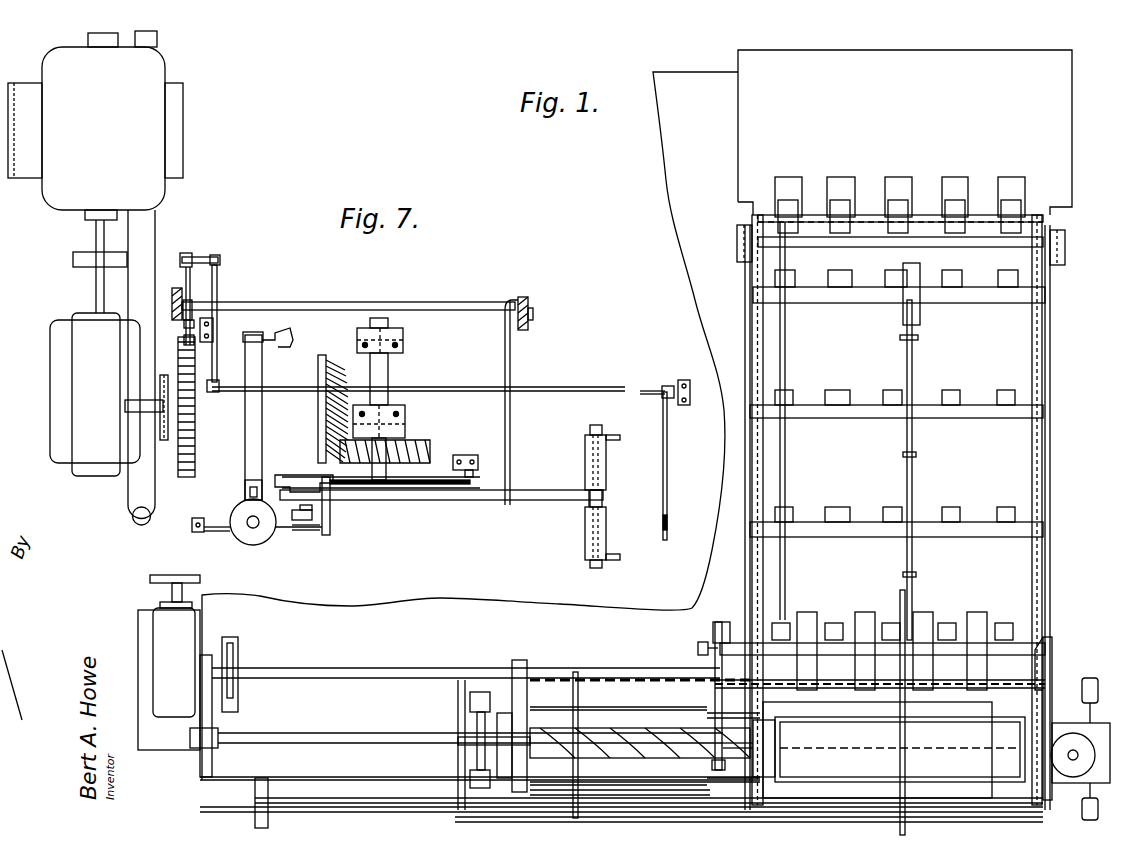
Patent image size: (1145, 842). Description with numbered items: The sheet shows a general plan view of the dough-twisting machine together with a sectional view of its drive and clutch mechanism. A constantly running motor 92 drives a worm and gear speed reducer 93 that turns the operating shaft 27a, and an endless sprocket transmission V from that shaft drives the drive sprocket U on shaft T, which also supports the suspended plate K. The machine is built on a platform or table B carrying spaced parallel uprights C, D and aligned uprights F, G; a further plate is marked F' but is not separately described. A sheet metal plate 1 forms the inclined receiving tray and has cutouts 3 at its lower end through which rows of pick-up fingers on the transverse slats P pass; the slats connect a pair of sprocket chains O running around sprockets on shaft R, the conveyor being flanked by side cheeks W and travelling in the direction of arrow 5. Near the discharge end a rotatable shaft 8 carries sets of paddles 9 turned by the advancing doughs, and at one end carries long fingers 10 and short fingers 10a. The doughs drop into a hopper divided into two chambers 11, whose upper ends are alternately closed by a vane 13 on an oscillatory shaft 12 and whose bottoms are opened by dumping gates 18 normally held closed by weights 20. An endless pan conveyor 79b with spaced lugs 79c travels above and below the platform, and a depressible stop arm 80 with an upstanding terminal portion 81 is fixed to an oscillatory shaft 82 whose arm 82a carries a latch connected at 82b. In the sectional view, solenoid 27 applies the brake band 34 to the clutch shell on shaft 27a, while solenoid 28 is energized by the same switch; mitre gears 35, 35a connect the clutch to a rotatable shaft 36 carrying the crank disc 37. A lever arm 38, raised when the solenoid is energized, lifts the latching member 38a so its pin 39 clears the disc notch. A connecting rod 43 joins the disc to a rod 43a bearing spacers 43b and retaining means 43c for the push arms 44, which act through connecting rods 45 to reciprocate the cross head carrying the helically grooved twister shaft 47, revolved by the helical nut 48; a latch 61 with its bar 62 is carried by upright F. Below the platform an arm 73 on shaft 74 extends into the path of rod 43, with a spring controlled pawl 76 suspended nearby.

In FIG. 7, the motor 92 is at (91, 125).
In FIG. 7, the worm and gear speed reducer 93 is at (52, 392).
In FIG. 7, the operating shaft 27a is at (135, 404).
In FIG. 7, the endless sprocket transmission V is at (163, 396).
In FIG. 7, the shaft 74 is at (195, 462).
In FIG. 7, the spring controlled pawl 76 is at (183, 332).
In FIG. 7, the connection 82b is at (198, 258).
In FIG. 7, the arm 82a is at (218, 282).
In FIG. 7, the oscillatory shaft 82 is at (545, 390).
In FIG. 7, the brake band 34 is at (250, 464).
In FIG. 7, the solenoid 27 is at (253, 540).
In FIG. 7, the mitre gear 35 is at (325, 356).
In FIG. 7, the mitre gear 35a is at (410, 445).
In FIG. 7, the rotatable shaft 36 is at (384, 370).
In FIG. 7, the crank disc 37 is at (304, 473).
In FIG. 7, the lever arm 38 is at (295, 530).
In FIG. 7, the latching member 38a is at (418, 490).
In FIG. 7, the pin 39 is at (330, 514).
In FIG. 7, the connecting rod 43 is at (444, 500).
In FIG. 7, the rod 43a is at (585, 455).
In FIG. 7, the spacers 43b is at (585, 445).
In FIG. 7, the retaining means 43c is at (600, 432).
In FIG. 7, the push arms 44 is at (610, 440).
In FIG. 1, the push arms 44 is at (618, 795).
In FIG. 7, the arm 73 is at (511, 362).
In FIG. 7, the depressible stop arm 80 is at (668, 470).
In FIG. 7, the upstanding terminal portion 81 is at (668, 524).
In FIG. 1, the sheet metal plate 1 is at (1072, 142).
In FIG. 1, the cutouts 3 is at (960, 190).
In FIG. 1, the shaft R is at (975, 247).
In FIG. 1, the upright C is at (737, 250).
In FIG. 1, the upright D is at (1066, 242).
In FIG. 1, the side cheeks W is at (748, 346).
In FIG. 1, the sprocket chains O is at (752, 462).
In FIG. 1, the platform B is at (1028, 578).
In FIG. 1, the transverse slats P is at (938, 418).
In FIG. 1, the arrow 5 is at (950, 392).
In FIG. 1, the endless pan conveyor 79b is at (912, 488).
In FIG. 1, the lugs 79c is at (916, 455).
In FIG. 1, the paddles 9 is at (806, 614).
In FIG. 1, the rotatable shaft 8 is at (946, 655).
In FIG. 1, the dumping gates 18 is at (992, 674).
In FIG. 1, the chambers 11 is at (852, 730).
In FIG. 1, the oscillatory shaft 12 is at (780, 748).
In FIG. 1, the vane 13 is at (805, 777).
In FIG. 1, the solenoid 28 is at (1082, 748).
In FIG. 1, the weights 20 is at (1088, 684).
In FIG. 1, the upright G is at (1048, 795).
In FIG. 1, the upright F is at (192, 723).
In FIG. 1, the drive sprocket U is at (238, 662).
In FIG. 1, the shaft T is at (376, 668).
In FIG. 1, the plate F' is at (508, 716).
In FIG. 1, the bar 62 is at (578, 773).
In FIG. 1, the helical nut 48 is at (530, 724).
In FIG. 1, the dough twister shaft 47 is at (645, 735).
In FIG. 1, the latch 61 is at (528, 755).
In FIG. 1, the connecting rods 45 is at (497, 780).
In FIG. 1, the long fingers 10 is at (698, 648).
In FIG. 1, the short fingers 10a is at (715, 660).
In FIG. 1, the suspended plate K is at (730, 622).